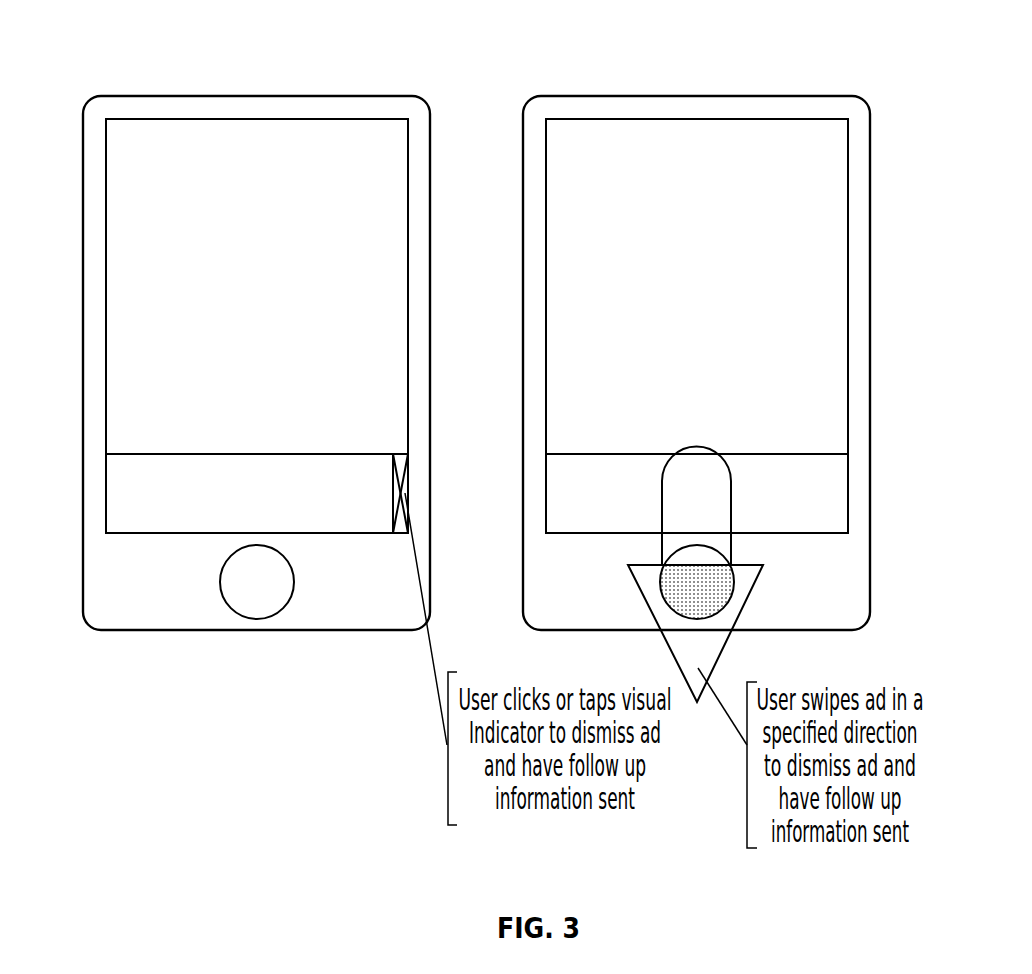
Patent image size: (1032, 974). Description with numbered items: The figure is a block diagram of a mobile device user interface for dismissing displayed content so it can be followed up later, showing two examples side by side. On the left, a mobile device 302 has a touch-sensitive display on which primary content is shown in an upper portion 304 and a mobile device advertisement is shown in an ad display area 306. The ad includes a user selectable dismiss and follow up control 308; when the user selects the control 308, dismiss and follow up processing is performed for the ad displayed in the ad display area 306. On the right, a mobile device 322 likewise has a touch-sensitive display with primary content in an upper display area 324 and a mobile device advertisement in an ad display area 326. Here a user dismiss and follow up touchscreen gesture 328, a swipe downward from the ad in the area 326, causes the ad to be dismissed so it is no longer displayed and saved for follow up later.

The mobile device 302 is at (234, 95).
The upper portion 304 is at (105, 247).
The ad display area 306 is at (105, 502).
The dismiss and follow up control 308 is at (398, 476).
The mobile device 322 is at (740, 95).
The upper display area 324 is at (848, 228).
The ad display area 326 is at (848, 492).
The dismiss and follow up touchscreen gesture 328 is at (662, 638).